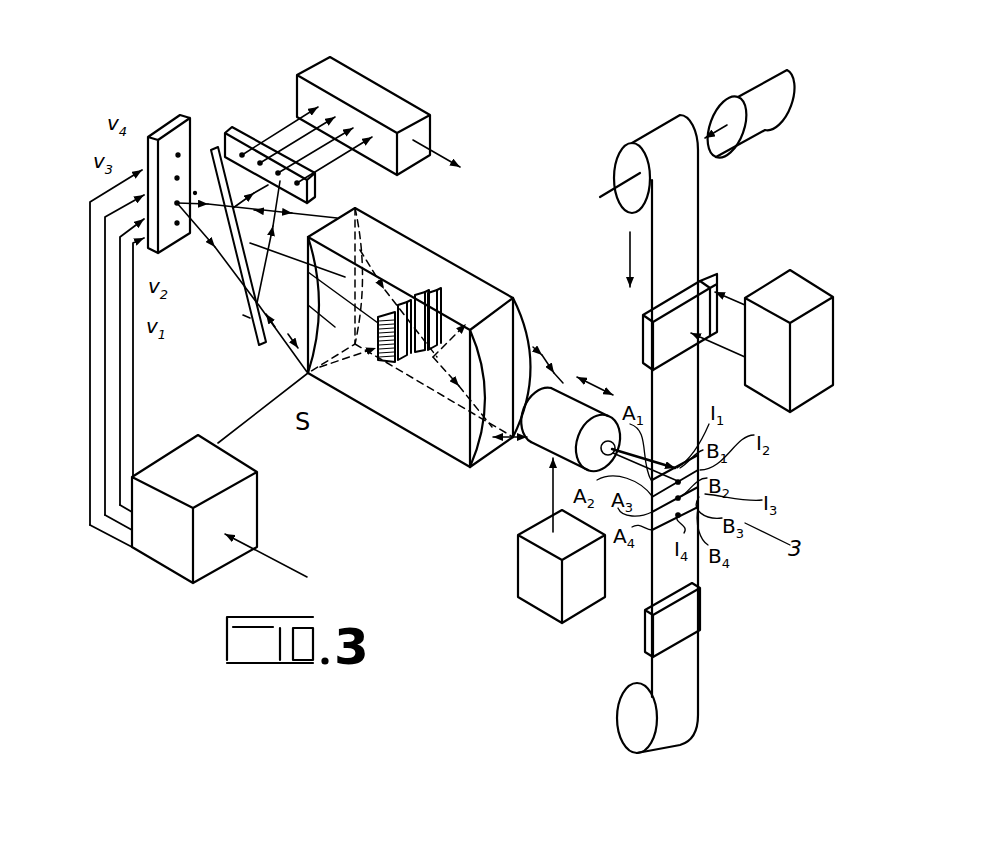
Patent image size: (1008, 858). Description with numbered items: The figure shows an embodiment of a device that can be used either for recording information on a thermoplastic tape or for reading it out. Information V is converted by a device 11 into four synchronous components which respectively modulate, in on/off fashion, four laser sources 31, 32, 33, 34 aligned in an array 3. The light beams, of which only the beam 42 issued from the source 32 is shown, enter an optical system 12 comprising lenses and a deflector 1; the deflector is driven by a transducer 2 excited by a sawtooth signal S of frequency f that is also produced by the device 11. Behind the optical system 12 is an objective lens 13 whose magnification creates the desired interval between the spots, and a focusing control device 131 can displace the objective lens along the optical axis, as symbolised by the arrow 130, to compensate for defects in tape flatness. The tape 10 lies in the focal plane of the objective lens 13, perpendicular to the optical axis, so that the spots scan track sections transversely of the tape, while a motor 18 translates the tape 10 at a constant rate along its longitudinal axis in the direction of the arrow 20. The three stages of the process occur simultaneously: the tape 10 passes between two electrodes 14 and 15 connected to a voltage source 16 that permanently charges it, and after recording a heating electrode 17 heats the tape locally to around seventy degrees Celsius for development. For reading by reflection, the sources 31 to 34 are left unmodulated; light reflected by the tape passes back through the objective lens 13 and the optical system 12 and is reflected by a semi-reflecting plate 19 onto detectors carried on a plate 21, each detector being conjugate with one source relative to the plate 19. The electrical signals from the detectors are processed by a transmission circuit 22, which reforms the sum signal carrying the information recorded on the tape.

The deflector 1 is at (430, 292).
The transducer 2 is at (388, 362).
The array 3 is at (150, 135).
The tape 10 is at (652, 582).
The device 11 is at (163, 570).
The optical system 12 is at (407, 238).
The objective lens 13 is at (534, 444).
The electrode 14 is at (712, 280).
The electrode 15 is at (737, 232).
The voltage source 16 is at (803, 410).
The heating electrode 17 is at (705, 612).
The motor 18 is at (770, 135).
The semi-reflecting plate 19 is at (258, 338).
The arrow 20 is at (630, 250).
The plate 21 is at (268, 140).
The transmission circuit 22 is at (377, 45).
The laser source 31 is at (177, 225).
The laser source 32 is at (195, 191).
The laser source 33 is at (177, 176).
The laser source 34 is at (178, 153).
The light-beam 42 is at (243, 315).
The arrow 130 is at (598, 381).
The focusing control device 131 is at (540, 611).